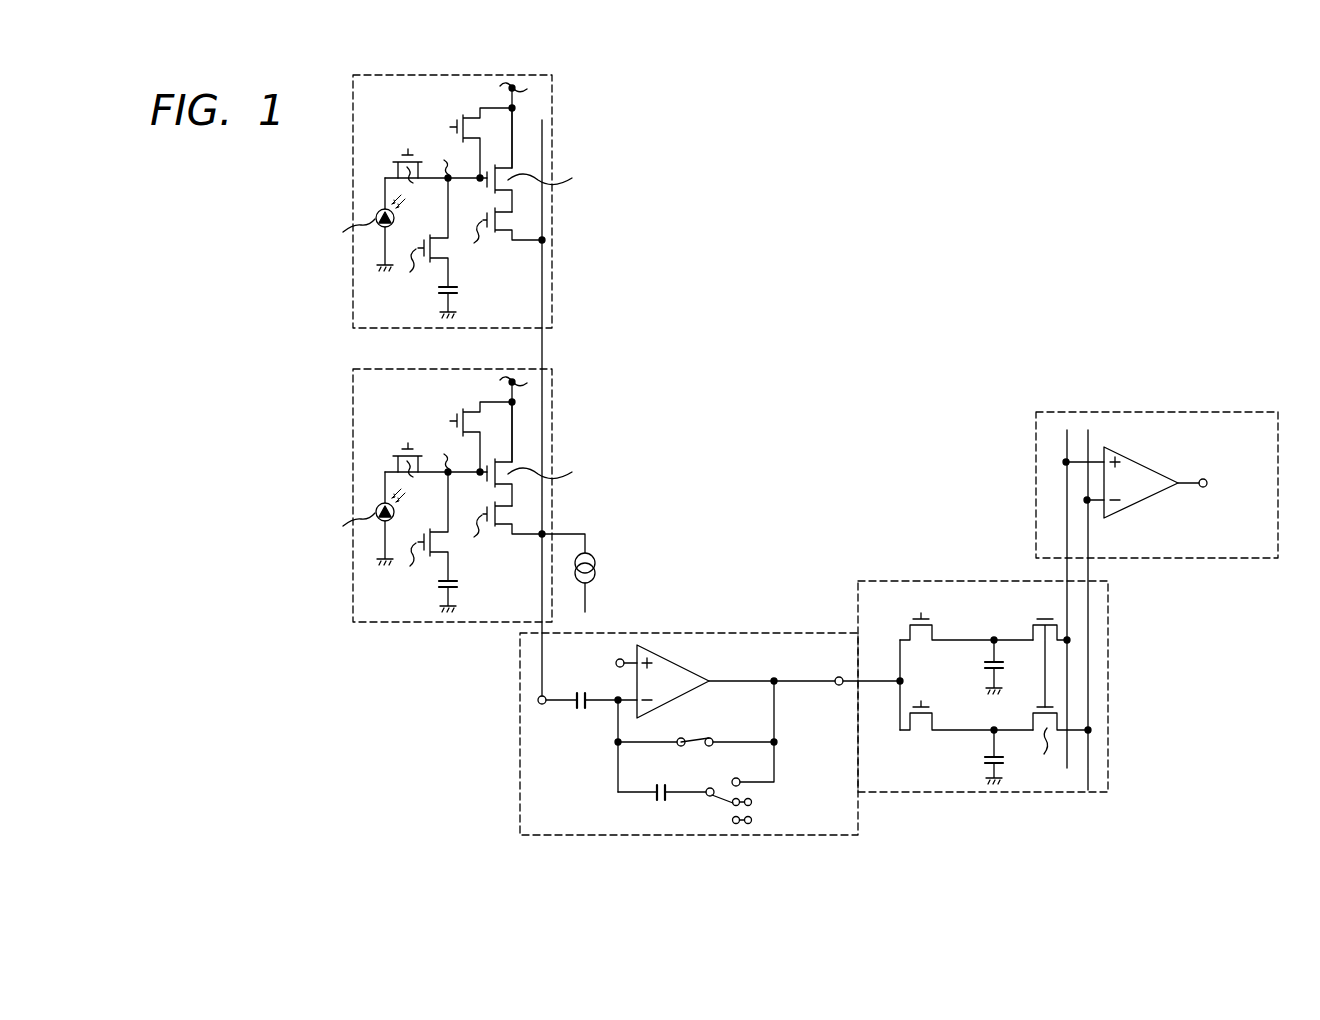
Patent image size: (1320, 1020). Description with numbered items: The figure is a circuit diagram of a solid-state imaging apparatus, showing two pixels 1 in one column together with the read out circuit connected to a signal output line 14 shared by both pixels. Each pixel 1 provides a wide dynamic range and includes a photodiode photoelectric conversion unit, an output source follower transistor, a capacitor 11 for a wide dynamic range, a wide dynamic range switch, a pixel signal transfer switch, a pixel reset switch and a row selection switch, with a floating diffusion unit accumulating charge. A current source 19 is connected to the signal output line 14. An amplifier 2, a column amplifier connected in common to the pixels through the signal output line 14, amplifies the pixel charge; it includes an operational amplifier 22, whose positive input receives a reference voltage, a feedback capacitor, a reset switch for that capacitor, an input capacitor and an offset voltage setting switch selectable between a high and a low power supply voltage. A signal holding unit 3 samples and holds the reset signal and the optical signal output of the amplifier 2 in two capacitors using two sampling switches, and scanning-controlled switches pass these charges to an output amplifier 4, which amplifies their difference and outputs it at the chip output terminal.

The pixel 1 is at (456, 348).
The capacitor 11 is at (460, 290).
The signal output line 14 is at (543, 352).
The current source 19 is at (597, 563).
The amplifier 2 is at (689, 703).
The operational amplifier 22 is at (671, 662).
The signal holding unit 3 is at (960, 581).
The output amplifier 4 is at (1157, 412).